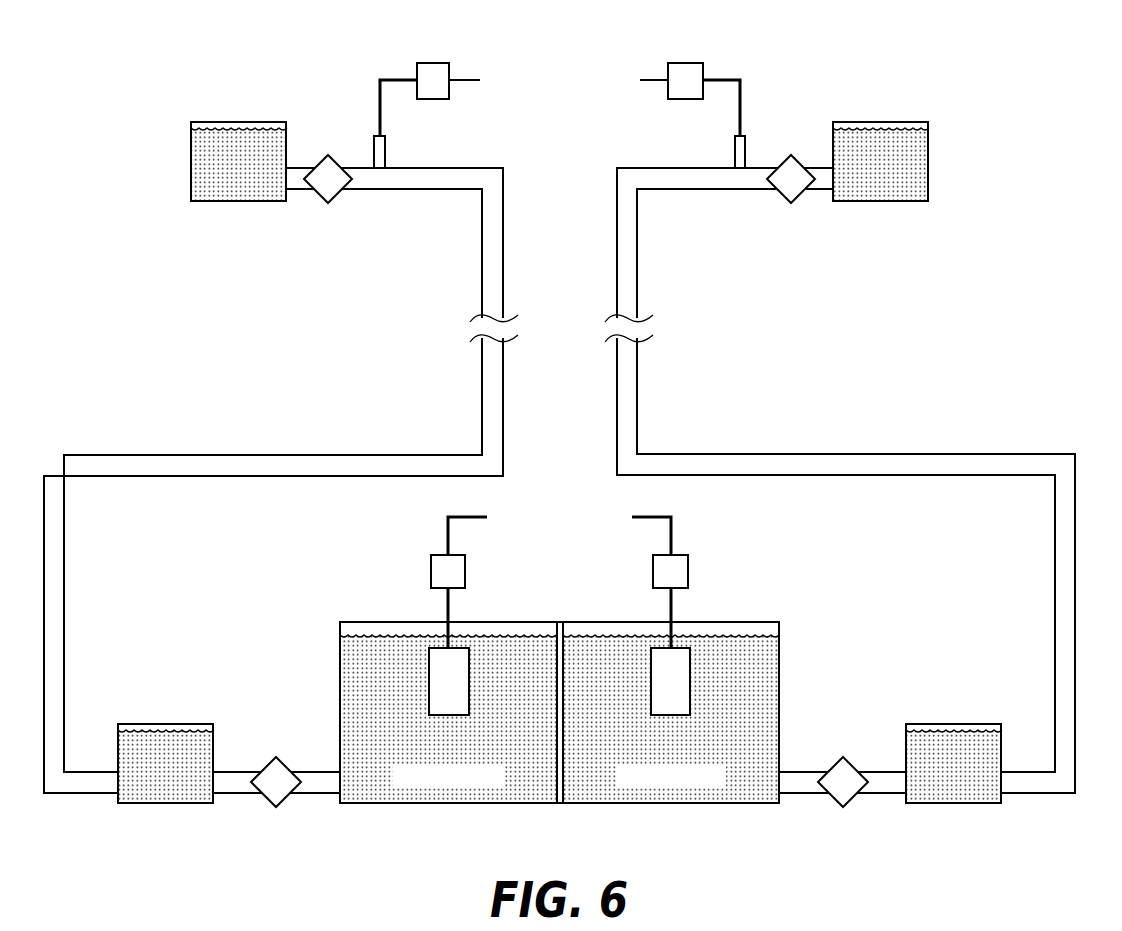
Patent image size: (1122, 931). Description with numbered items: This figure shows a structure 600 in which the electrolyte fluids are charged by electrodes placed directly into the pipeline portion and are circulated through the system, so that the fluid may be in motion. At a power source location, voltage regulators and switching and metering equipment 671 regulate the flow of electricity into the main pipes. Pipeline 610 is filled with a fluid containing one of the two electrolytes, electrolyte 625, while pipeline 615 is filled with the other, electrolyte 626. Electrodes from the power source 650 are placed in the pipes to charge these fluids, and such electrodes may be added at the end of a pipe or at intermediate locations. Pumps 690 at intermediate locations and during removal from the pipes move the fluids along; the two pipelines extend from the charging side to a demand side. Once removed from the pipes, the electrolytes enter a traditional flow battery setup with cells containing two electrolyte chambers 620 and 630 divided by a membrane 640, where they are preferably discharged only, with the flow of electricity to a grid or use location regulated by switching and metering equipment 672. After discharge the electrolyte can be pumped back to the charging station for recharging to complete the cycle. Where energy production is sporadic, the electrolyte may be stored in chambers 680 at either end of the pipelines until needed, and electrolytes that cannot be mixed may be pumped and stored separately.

The structure 600 is at (569, 443).
The pipeline 610 is at (482, 263).
The pipeline 615 is at (637, 275).
The electrolyte chamber 620 is at (356, 620).
The electrolyte 625 is at (290, 465).
The electrolyte 626 is at (678, 467).
The electrolyte chamber 630 is at (741, 620).
The membrane 640 is at (564, 662).
The power source 650 is at (385, 152).
The switching and metering equipment 671 is at (438, 63).
The switching and metering equipment 672 is at (431, 572).
The chambers 680 is at (217, 122).
The pumps 690 is at (341, 158).